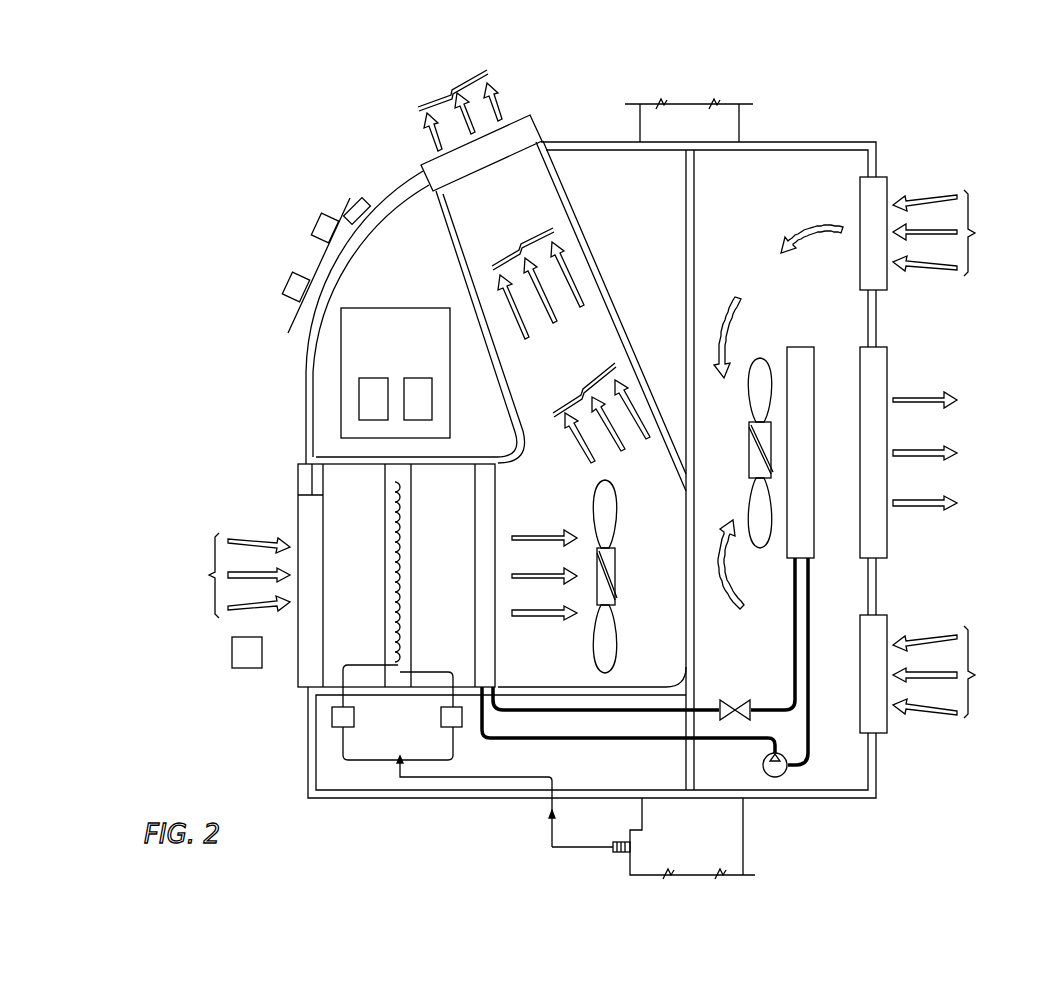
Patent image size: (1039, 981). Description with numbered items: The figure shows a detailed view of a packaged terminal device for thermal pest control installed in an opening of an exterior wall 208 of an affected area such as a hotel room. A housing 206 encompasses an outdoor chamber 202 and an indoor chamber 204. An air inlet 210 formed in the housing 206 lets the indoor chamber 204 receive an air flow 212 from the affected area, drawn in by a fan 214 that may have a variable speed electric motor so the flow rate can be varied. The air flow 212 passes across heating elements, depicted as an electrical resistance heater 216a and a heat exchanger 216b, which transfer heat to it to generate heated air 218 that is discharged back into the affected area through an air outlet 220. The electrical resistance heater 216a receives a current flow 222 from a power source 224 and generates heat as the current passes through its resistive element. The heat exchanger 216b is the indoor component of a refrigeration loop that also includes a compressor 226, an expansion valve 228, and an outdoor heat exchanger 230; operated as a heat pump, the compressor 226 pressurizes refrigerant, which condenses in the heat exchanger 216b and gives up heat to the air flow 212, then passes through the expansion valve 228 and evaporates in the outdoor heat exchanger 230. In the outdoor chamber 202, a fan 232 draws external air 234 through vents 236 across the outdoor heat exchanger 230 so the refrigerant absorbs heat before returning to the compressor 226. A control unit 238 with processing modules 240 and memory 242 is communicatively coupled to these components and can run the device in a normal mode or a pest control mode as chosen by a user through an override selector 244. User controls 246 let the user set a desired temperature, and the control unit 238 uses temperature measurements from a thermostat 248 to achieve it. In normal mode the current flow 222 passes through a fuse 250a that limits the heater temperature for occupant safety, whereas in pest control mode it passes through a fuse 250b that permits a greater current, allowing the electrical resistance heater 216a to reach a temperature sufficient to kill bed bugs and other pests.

The outdoor chamber 202 is at (729, 243).
The indoor chamber 204 is at (614, 243).
The housing 206 is at (307, 752).
The exterior wall 208 is at (742, 108).
The air inlet 210 is at (296, 672).
The air flow 212 is at (232, 575).
The fan 214 is at (618, 582).
The electrical resistance heater 216a is at (387, 563).
The heat exchanger 216b is at (500, 640).
The heated air 218 is at (534, 259).
The air outlet 220 is at (518, 117).
The current flow 222 is at (500, 767).
The power source 224 is at (630, 855).
The compressor 226 is at (762, 765).
The expansion valve 228 is at (736, 702).
The outdoor heat exchanger 230 is at (802, 345).
The fan 232 is at (762, 357).
The external air 234 is at (952, 454).
The vents 236 is at (888, 192).
The control unit 238 is at (395, 345).
The processing modules 240 is at (374, 378).
The memory 242 is at (418, 378).
The override selector 244 is at (313, 220).
The user controls 246 is at (285, 275).
The thermostat 248 is at (232, 660).
The fuse 250a is at (358, 717).
The fuse 250b is at (440, 724).